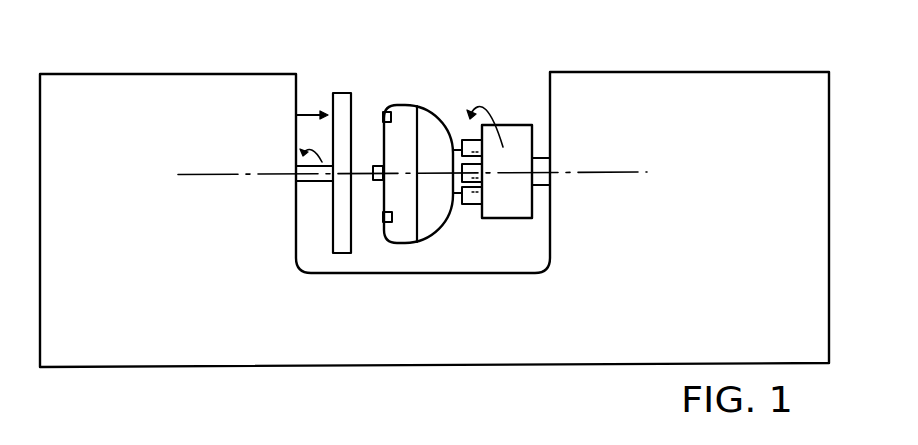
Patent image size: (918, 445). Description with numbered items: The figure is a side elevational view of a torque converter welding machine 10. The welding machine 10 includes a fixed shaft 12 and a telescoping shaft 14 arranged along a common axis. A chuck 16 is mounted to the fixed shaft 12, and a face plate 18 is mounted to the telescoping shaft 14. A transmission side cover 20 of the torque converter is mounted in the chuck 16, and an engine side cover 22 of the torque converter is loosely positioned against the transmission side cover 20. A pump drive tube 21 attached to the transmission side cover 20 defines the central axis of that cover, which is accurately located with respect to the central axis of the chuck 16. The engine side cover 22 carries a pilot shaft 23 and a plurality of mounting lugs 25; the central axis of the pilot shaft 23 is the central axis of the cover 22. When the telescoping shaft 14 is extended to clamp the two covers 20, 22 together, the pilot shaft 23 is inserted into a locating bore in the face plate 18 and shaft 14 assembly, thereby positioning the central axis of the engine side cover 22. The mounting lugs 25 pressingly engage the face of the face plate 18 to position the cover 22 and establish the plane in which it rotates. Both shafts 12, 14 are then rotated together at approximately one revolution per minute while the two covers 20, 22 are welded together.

The welding machine 10 is at (699, 85).
The fixed shaft 12 is at (545, 165).
The telescoping shaft 14 is at (308, 183).
The chuck 16 is at (502, 147).
The face plate 18 is at (342, 100).
The transmission side cover 20 is at (433, 120).
The pump drive tube 21 is at (455, 190).
The engine side cover 22 is at (400, 127).
The pilot shaft 23 is at (375, 181).
The mounting lugs 25 is at (390, 110).